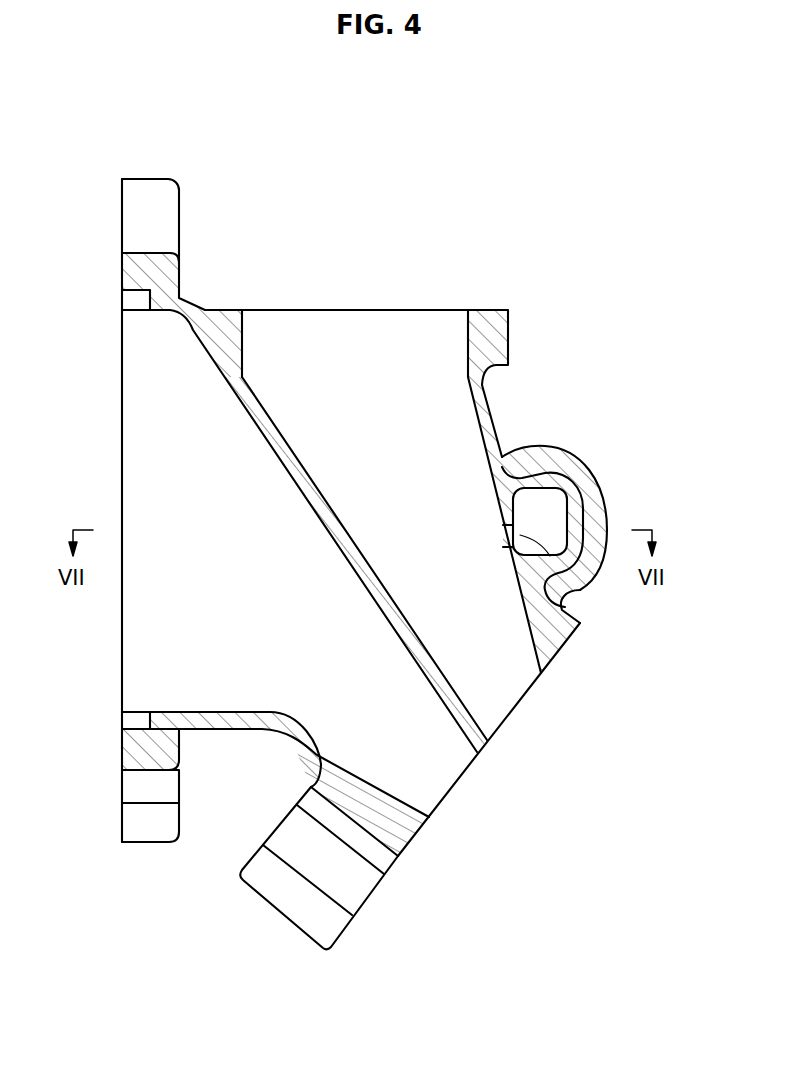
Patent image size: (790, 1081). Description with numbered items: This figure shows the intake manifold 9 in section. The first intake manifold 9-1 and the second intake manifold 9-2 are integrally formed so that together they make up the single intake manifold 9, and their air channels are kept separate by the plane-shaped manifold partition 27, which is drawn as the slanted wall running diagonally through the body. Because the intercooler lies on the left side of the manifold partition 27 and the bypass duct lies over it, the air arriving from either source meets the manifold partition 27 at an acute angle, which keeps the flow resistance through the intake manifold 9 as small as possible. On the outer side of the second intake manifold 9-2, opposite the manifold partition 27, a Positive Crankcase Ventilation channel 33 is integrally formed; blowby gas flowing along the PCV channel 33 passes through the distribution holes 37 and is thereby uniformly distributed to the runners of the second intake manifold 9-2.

The manifold partition 27 is at (303, 478).
The PCV channel 33 is at (538, 515).
The distribution hole 37 is at (583, 591).
The intake manifold 9 is at (462, 786).
The first intake manifold 9-1 is at (425, 773).
The second intake manifold 9-2 is at (490, 680).